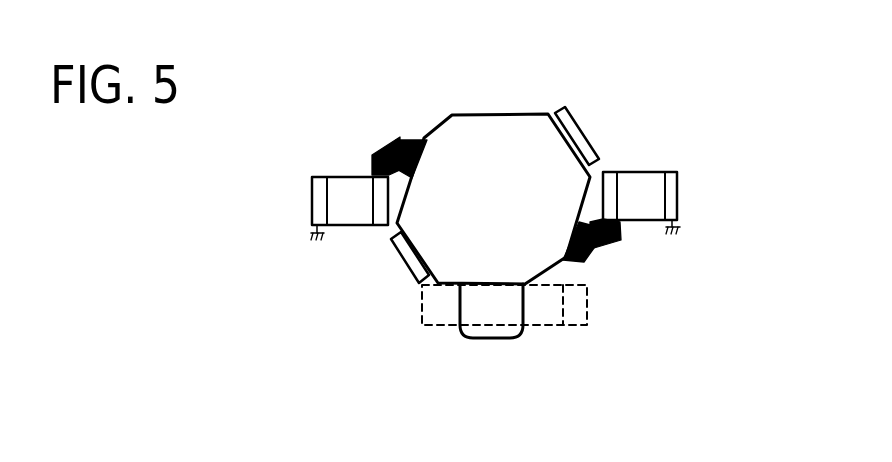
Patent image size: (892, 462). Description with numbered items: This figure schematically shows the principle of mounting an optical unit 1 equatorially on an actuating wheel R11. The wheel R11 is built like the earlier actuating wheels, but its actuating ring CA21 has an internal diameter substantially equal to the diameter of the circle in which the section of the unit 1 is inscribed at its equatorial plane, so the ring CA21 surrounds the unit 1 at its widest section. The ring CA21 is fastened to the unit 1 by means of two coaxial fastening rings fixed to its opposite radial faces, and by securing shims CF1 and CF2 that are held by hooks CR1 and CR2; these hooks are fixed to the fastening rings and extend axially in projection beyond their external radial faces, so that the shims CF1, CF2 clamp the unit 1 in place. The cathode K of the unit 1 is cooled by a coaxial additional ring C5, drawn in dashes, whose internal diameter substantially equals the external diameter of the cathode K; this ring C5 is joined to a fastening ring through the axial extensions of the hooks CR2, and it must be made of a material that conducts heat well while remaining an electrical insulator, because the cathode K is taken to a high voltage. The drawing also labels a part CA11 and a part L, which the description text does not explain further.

The unit 1 is at (505, 213).
The hook CR1 is at (368, 163).
The securing shim CF1 is at (415, 135).
The hook CR2 is at (592, 245).
The securing shim CF2 is at (583, 260).
The linear actuator unit L is at (357, 218).
The actuating wheel R11 is at (262, 206).
The actuating ring CA21 is at (608, 172).
The actuator coupling CA11 is at (676, 172).
The coaxial additional ring C5 is at (422, 315).
The cathode K is at (498, 330).